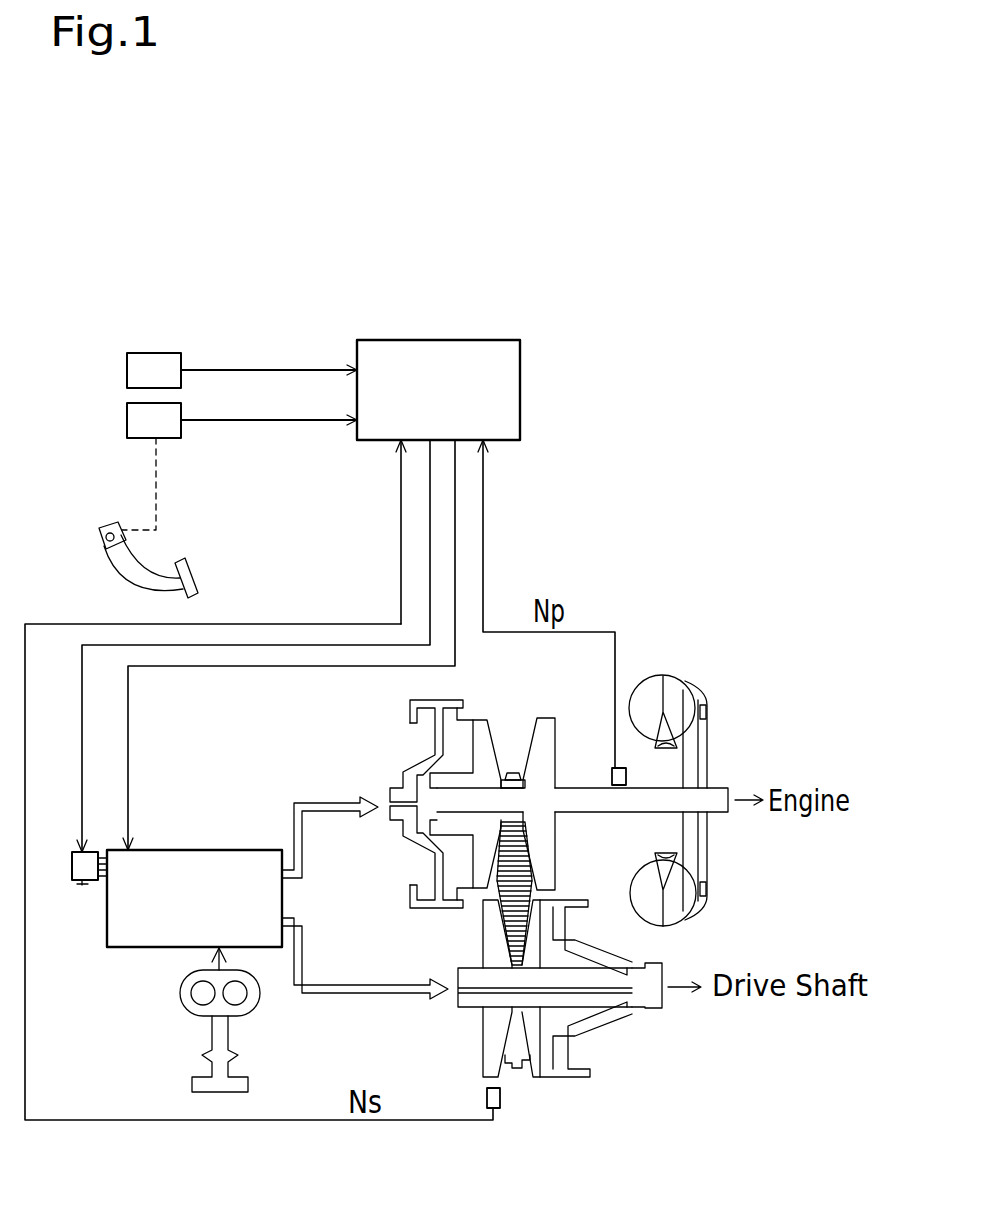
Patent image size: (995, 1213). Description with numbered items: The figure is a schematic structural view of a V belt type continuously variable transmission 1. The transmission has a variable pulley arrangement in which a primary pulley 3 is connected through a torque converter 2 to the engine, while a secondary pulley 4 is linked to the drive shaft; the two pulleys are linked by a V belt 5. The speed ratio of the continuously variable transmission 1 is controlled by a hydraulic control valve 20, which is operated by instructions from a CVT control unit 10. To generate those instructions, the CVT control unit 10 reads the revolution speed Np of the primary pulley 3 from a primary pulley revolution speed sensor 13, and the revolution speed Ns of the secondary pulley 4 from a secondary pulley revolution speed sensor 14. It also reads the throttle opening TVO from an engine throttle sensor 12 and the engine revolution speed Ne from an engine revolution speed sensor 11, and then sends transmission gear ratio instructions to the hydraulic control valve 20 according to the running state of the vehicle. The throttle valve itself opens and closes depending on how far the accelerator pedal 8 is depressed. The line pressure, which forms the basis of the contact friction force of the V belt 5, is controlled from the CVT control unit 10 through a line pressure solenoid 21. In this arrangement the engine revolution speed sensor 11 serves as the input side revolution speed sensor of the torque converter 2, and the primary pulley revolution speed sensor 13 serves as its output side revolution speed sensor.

The continuously variable transmission 1 is at (559, 899).
The torque converter 2 is at (662, 676).
The primary pulley 3 is at (540, 718).
The secondary pulley 4 is at (487, 1035).
The V belt 5 is at (512, 770).
The accelerator pedal 8 is at (142, 580).
The CVT control unit 10 is at (490, 340).
The engine revolution speed sensor 11 is at (127, 370).
The engine throttle sensor 12 is at (127, 420).
The primary pulley revolution speed sensor 13 is at (612, 768).
The secondary pulley revolution speed sensor 14 is at (502, 1097).
The hydraulic control valve 20 is at (134, 948).
The line pressure solenoid 21 is at (66, 876).